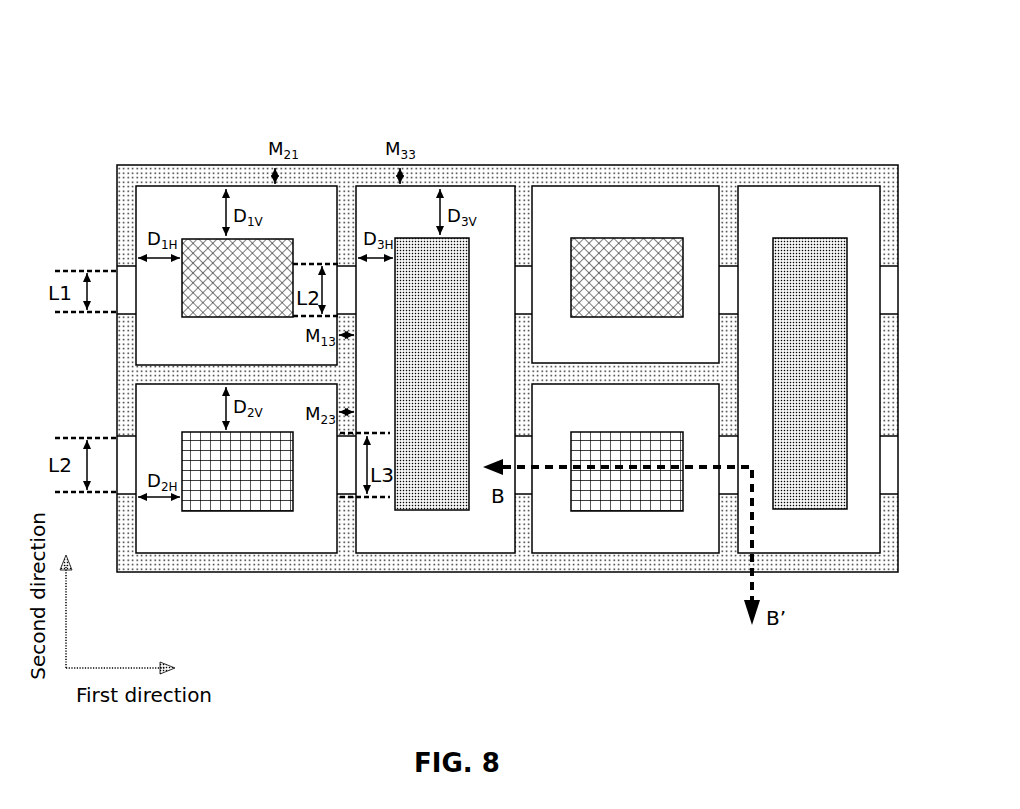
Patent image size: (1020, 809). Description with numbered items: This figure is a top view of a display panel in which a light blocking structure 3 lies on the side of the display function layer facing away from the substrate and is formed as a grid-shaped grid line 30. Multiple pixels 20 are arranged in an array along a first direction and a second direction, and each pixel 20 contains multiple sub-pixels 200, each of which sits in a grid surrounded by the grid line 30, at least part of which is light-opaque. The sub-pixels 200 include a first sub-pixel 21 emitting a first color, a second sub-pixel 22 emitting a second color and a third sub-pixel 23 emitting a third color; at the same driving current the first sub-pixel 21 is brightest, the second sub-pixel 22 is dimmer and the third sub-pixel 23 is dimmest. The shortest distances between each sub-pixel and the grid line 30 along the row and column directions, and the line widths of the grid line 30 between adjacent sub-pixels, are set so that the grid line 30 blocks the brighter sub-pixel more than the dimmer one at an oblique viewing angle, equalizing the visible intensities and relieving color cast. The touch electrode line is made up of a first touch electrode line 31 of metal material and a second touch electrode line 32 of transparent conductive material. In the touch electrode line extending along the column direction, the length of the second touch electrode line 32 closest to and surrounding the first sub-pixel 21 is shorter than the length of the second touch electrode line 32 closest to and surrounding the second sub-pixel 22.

The light blocking structure 3 is at (528, 160).
The pixel 20 is at (828, 100).
The first sub-pixel 21 is at (615, 247).
The second sub-pixel 22 is at (655, 437).
The third sub-pixel 23 is at (810, 247).
The sub-pixel 200 is at (838, 260).
The grid line 30 is at (110, 57).
The first touch electrode line 31 is at (192, 166).
The second touch electrode line 32 is at (128, 288).